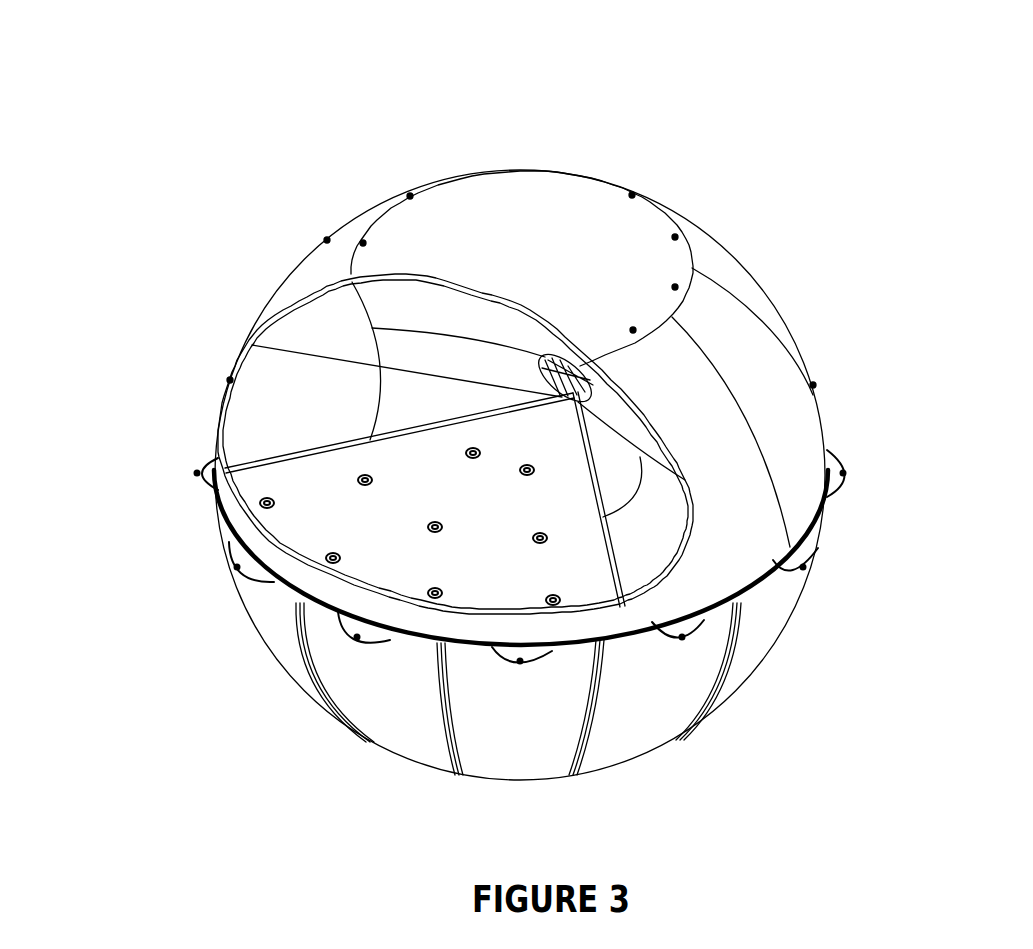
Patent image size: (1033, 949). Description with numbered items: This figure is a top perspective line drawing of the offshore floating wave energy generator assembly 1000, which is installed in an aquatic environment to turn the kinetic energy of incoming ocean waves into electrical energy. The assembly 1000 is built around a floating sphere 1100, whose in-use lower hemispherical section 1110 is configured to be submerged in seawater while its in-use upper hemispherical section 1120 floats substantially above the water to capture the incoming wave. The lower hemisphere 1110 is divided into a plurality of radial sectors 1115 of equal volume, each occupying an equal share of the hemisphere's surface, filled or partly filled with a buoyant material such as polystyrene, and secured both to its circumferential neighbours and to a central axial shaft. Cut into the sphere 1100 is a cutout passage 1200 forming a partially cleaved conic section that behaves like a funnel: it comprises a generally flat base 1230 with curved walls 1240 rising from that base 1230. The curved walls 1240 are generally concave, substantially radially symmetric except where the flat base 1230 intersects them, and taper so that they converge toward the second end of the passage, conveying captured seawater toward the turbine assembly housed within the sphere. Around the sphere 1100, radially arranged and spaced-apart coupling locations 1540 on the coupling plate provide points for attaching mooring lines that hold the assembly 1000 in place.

The offshore floating wave energy generator assembly 1000 is at (552, 157).
The floating sphere 1100 is at (703, 205).
The upper hemispherical section 1120 is at (785, 283).
The lower hemispherical section 1110 is at (813, 626).
The radial sectors 1115 is at (656, 722).
The cutout passage 1200 is at (228, 346).
The curved walls 1240 is at (306, 312).
The flat base 1230 is at (273, 487).
The coupling locations 1540 is at (214, 558).